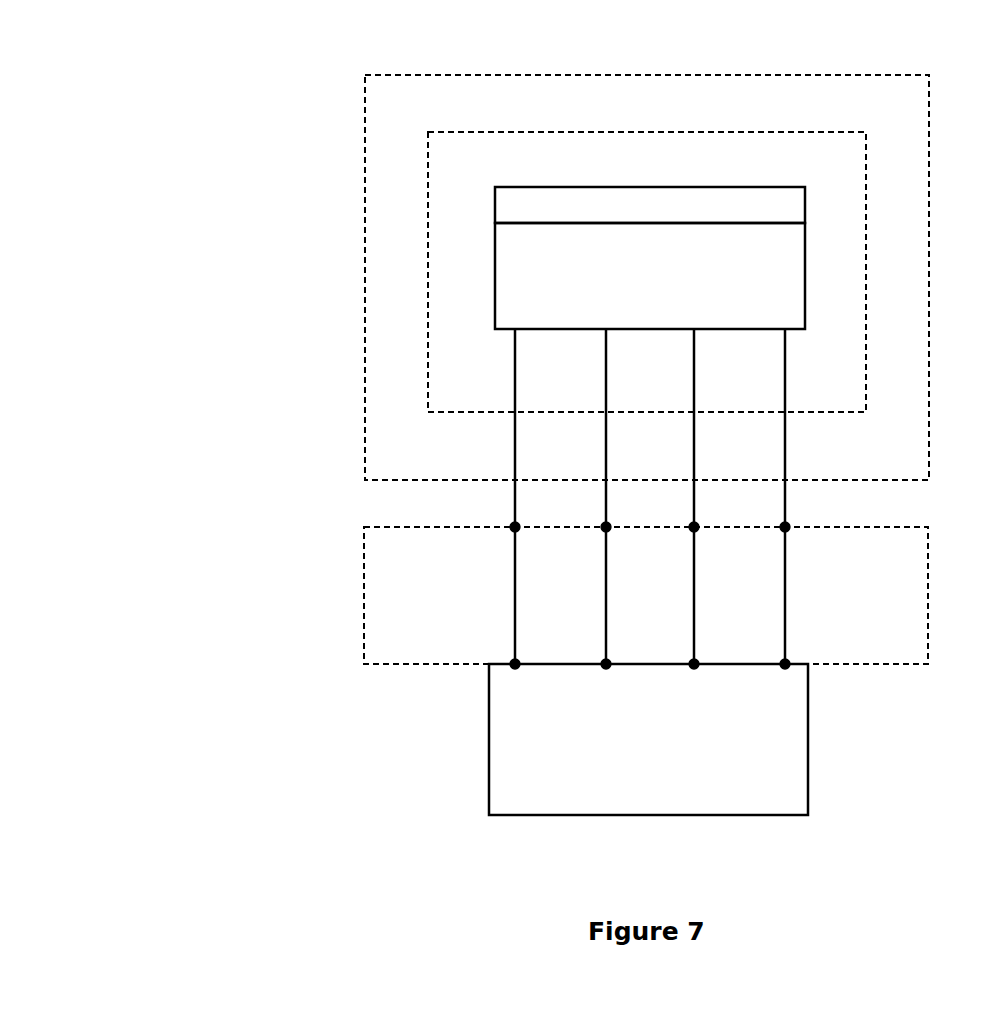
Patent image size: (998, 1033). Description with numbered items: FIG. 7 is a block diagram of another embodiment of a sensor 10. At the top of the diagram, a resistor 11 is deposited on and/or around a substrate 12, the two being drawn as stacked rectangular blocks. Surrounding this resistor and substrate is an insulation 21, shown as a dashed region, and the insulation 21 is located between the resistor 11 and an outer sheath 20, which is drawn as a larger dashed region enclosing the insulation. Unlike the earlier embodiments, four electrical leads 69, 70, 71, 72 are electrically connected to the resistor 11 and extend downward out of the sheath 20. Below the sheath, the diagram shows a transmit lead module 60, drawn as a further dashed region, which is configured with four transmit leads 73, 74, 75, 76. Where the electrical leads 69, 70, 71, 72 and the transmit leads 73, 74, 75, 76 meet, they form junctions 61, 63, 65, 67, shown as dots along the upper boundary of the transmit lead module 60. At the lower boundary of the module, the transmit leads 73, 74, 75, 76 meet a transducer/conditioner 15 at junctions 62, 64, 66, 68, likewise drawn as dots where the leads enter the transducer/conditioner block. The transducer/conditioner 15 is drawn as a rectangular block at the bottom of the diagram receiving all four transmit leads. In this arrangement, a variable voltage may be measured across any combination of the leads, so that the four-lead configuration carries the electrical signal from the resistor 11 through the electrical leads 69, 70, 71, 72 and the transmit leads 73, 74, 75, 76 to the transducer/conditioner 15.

The sensor 10 is at (172, 108).
The resistor 11 is at (495, 253).
The substrate 12 is at (683, 187).
The transducer/conditioner 15 is at (808, 733).
The sheath 20 is at (892, 480).
The insulation 21 is at (502, 412).
The transmit lead module 60 is at (893, 664).
The junction 61 is at (524, 539).
The junction 62 is at (523, 654).
The junction 63 is at (615, 539).
The junction 64 is at (614, 654).
The junction 65 is at (703, 539).
The junction 66 is at (702, 654).
The junction 67 is at (794, 539).
The junction 68 is at (793, 654).
The electrical lead 69 is at (515, 373).
The electrical lead 70 is at (606, 373).
The electrical lead 71 is at (694, 373).
The electrical lead 72 is at (785, 373).
The transmit lead 73 is at (515, 588).
The transmit lead 74 is at (606, 588).
The transmit lead 75 is at (694, 588).
The transmit lead 76 is at (785, 588).